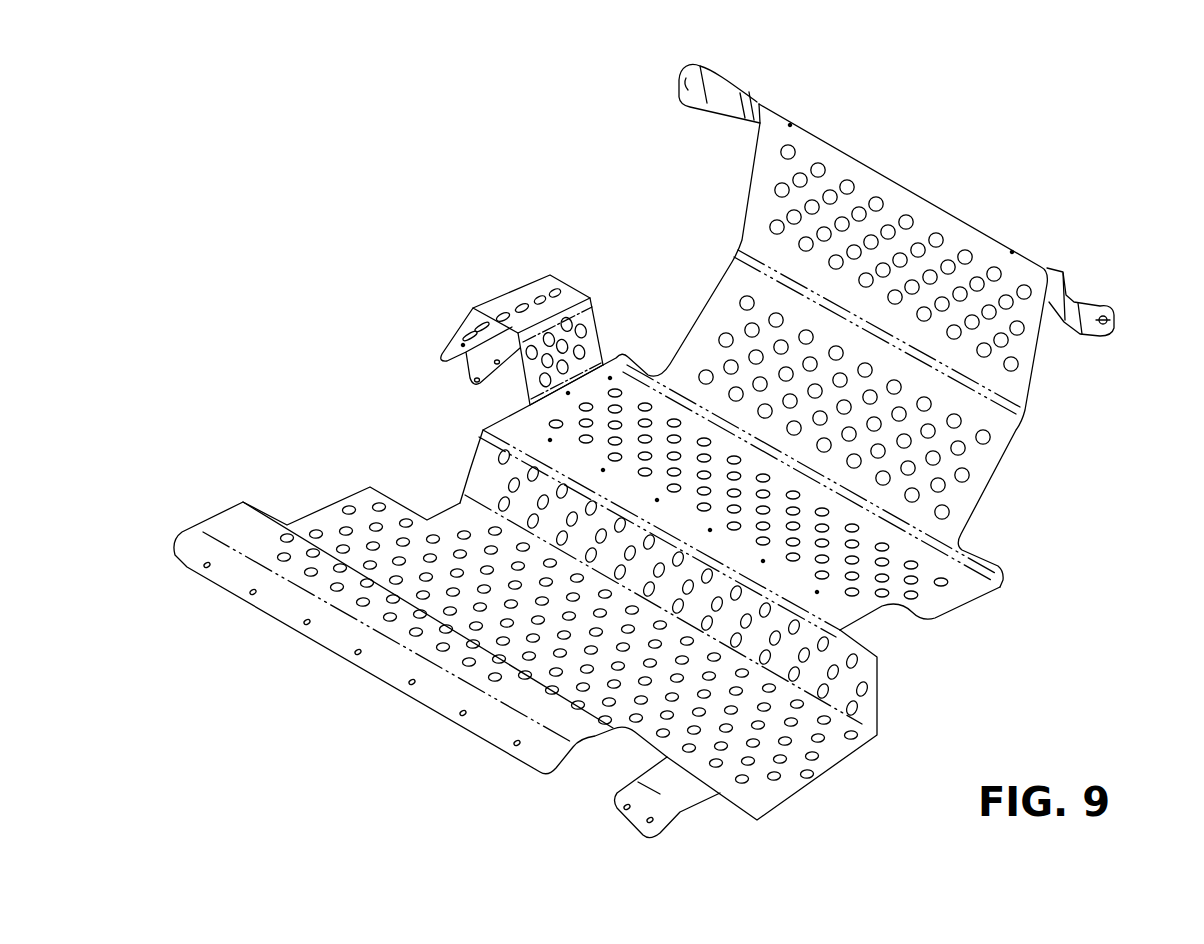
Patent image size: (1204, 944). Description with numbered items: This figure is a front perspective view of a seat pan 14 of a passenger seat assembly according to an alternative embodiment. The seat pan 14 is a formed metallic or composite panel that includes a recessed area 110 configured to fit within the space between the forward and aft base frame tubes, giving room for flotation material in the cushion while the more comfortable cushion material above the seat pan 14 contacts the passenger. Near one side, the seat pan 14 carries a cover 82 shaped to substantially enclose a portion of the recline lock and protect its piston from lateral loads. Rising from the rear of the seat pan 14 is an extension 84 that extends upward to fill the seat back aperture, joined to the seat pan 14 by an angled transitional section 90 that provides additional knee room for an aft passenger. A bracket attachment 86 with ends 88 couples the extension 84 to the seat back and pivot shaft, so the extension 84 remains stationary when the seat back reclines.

The seat pan 14 is at (538, 657).
The cover 82 is at (517, 302).
The extension 84 is at (946, 226).
The bracket attachment 86 is at (757, 103).
The ends 88 is at (686, 80).
The transitional section 90 is at (945, 471).
The recessed area 110 is at (773, 714).